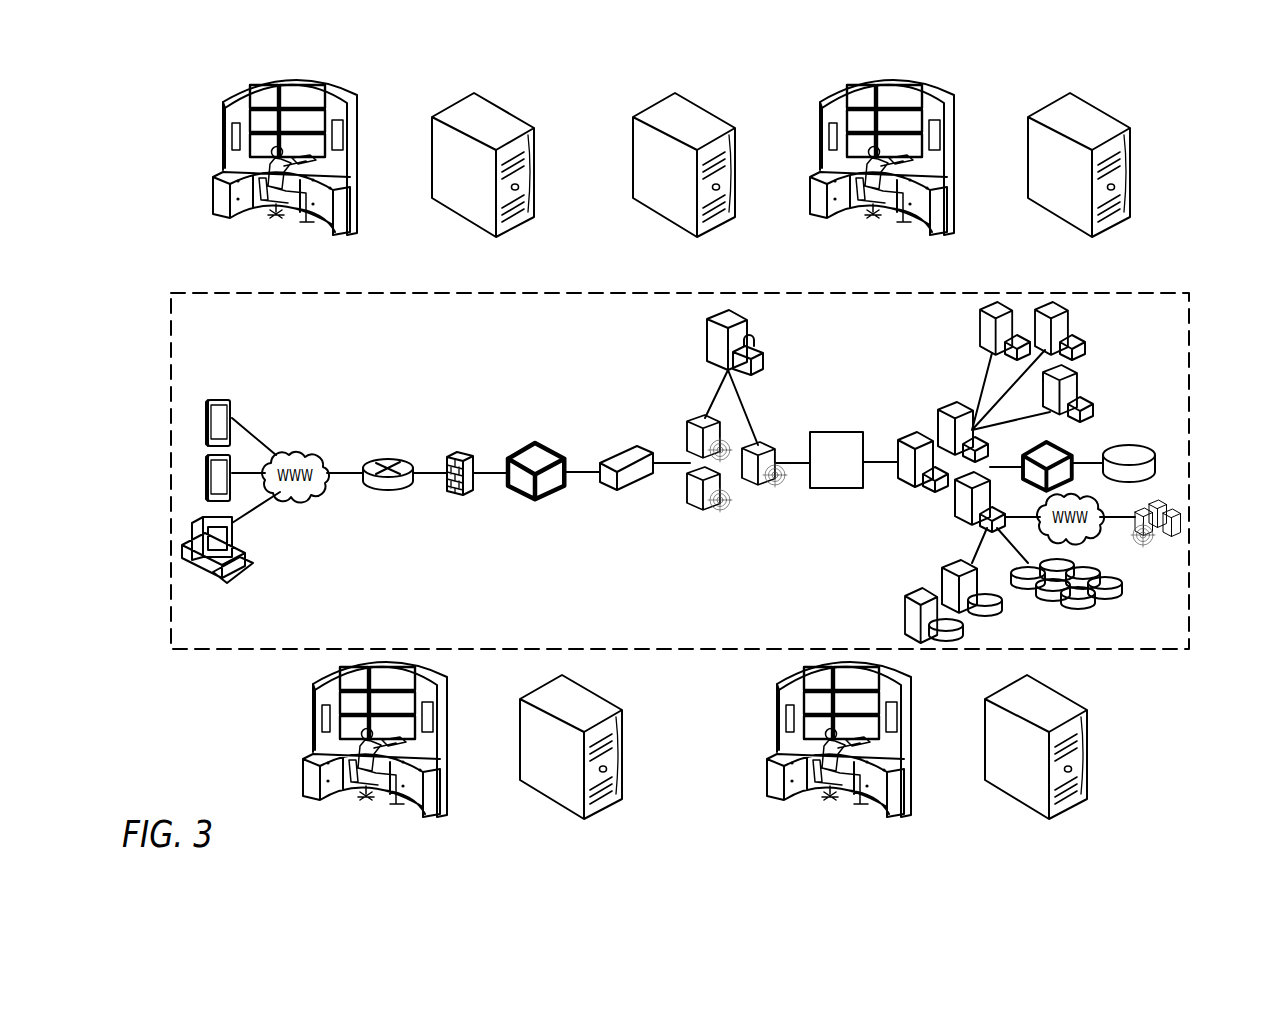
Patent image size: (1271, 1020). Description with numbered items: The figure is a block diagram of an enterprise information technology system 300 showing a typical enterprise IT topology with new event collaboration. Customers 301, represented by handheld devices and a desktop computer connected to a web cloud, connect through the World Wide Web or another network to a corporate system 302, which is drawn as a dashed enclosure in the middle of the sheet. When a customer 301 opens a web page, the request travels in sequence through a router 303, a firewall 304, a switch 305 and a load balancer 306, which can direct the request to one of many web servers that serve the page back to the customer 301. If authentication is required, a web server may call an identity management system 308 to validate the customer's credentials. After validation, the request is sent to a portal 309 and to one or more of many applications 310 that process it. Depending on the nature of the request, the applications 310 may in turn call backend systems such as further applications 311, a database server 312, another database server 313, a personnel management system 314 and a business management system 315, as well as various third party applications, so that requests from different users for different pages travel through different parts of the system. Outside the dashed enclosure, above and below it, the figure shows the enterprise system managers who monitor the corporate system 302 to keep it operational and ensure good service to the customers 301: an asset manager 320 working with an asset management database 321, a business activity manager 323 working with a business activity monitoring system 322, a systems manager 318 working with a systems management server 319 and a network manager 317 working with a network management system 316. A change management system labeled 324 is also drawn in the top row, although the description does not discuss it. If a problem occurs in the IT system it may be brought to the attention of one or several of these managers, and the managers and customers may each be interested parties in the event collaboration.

The enterprise information technology system 300 is at (1190, 118).
The customers 301 is at (295, 450).
The corporate system 302 is at (1190, 346).
The router 303 is at (388, 456).
The firewall 304 is at (458, 451).
The switch 305 is at (537, 443).
The load balancer 306 is at (618, 447).
The identity management system 308 is at (706, 341).
The portal 309 is at (836, 432).
The applications 310 is at (904, 433).
The applications 311 is at (955, 508).
The database server 312 is at (1130, 445).
The database server 313 is at (1122, 588).
The personnel management system 314 is at (1072, 325).
The business management system 315 is at (979, 330).
The network management system 316 is at (1089, 757).
The network manager 317 is at (912, 740).
The systems manager 318 is at (447, 740).
The systems management server 319 is at (625, 757).
The asset manager 320 is at (358, 155).
The asset management database 321 is at (534, 172).
The business activity monitoring system 322 is at (1133, 172).
The business activity manager 323 is at (955, 155).
The change management system 324 is at (736, 173).